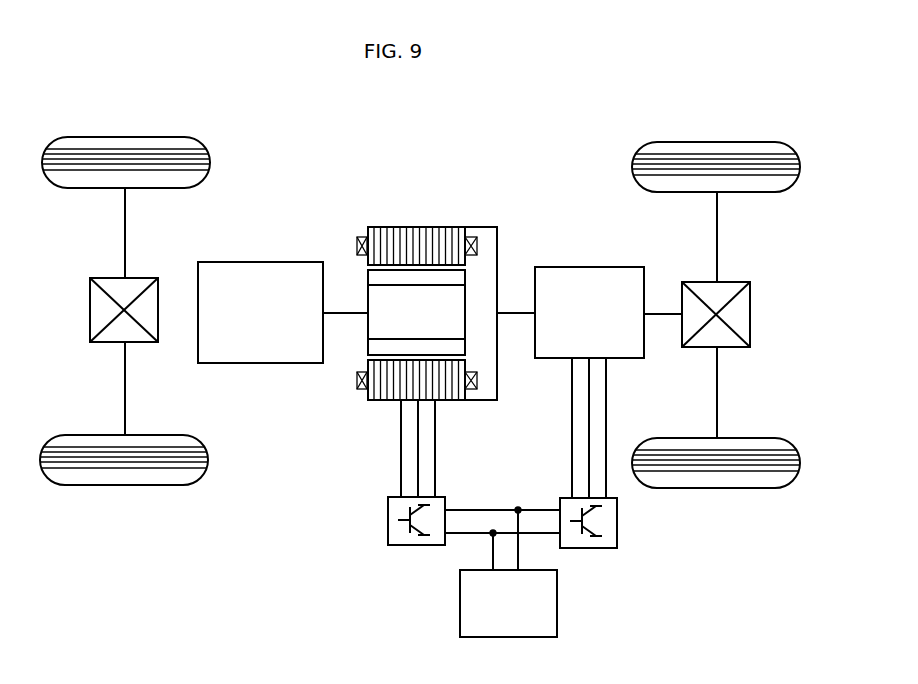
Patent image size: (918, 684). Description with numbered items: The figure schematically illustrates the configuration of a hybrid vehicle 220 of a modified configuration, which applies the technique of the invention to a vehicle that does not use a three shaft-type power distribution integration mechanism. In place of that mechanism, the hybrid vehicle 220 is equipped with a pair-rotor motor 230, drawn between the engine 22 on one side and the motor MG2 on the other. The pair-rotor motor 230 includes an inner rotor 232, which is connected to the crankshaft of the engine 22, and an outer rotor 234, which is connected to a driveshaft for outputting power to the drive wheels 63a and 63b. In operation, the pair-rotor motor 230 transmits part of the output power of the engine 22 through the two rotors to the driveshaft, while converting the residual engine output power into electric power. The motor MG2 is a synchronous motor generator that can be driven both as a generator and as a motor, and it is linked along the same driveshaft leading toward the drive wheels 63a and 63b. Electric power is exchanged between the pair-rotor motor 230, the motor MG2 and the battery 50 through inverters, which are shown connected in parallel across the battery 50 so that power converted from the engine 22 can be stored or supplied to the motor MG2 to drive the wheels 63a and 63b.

The engine 22 is at (262, 363).
The hybrid vehicle 220 is at (538, 146).
The pair-rotor motor 230 is at (422, 150).
The inner rotor 232 is at (368, 296).
The outer rotor 234 is at (418, 227).
The motor MG2 is at (588, 267).
The battery 50 is at (557, 603).
The drive wheel 63a is at (716, 142).
The drive wheel 63b is at (717, 490).